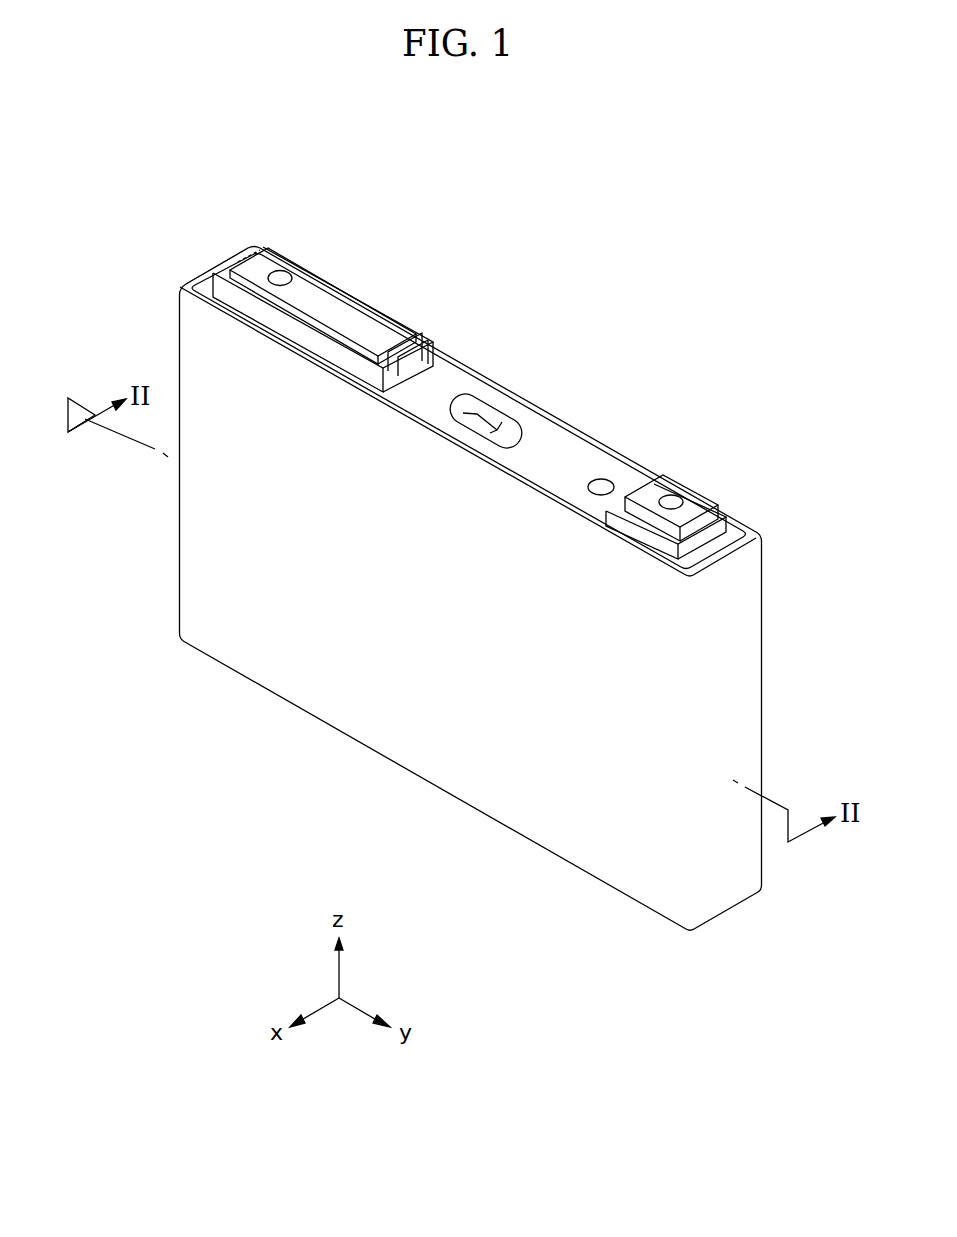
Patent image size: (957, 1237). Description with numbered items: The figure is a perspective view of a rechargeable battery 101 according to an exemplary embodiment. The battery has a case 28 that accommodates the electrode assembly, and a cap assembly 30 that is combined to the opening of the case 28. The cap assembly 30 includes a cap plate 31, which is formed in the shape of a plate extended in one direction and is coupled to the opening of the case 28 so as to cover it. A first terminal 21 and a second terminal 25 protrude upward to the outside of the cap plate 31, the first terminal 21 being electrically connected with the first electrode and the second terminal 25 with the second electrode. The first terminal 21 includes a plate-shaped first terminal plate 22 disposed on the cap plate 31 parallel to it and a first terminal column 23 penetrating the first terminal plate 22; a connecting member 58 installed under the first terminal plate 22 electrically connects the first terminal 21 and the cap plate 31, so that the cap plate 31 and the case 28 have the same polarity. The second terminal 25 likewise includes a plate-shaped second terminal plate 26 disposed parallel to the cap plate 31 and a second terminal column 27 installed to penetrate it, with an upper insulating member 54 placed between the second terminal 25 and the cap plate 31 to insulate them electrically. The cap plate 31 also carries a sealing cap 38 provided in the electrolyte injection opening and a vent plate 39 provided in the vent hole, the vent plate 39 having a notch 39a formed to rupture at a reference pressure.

The rechargeable battery 101 is at (545, 245).
The first terminal 21 is at (760, 450).
The first terminal plate 22 is at (700, 505).
The first terminal column 23 is at (673, 494).
The second terminal 25 is at (374, 231).
The second terminal plate 26 is at (323, 290).
The second terminal column 27 is at (282, 270).
The case 28 is at (388, 733).
The cap assembly 30 is at (575, 418).
The cap plate 31 is at (445, 380).
The sealing cap 38 is at (603, 480).
The vent plate 39 is at (490, 402).
The notch 39a is at (505, 416).
The upper insulating member 54 is at (388, 305).
The connecting member 58 is at (705, 538).